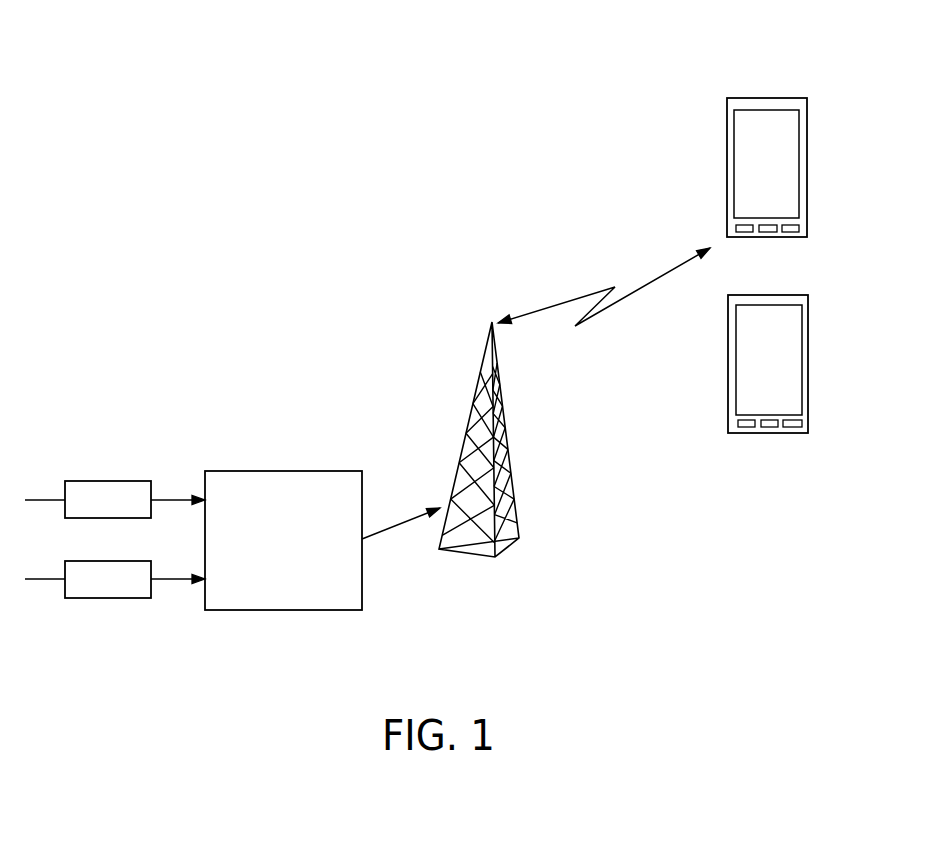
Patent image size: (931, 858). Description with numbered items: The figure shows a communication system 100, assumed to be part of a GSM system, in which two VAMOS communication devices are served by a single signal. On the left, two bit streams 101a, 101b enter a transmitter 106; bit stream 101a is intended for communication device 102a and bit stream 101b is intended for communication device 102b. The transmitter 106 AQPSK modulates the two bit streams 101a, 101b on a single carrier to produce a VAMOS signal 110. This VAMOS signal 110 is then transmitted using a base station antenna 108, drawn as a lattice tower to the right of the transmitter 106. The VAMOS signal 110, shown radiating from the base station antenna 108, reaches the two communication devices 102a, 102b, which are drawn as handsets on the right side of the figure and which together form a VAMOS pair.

The communication system 100 is at (320, 197).
The bit stream 101a is at (36, 500).
The bit stream 101b is at (40, 579).
The transmitter 106 is at (285, 470).
The base station antenna 108 is at (483, 368).
The VAMOS signal 110 is at (590, 290).
The communication device 102a is at (768, 433).
The communication device 102b is at (767, 98).